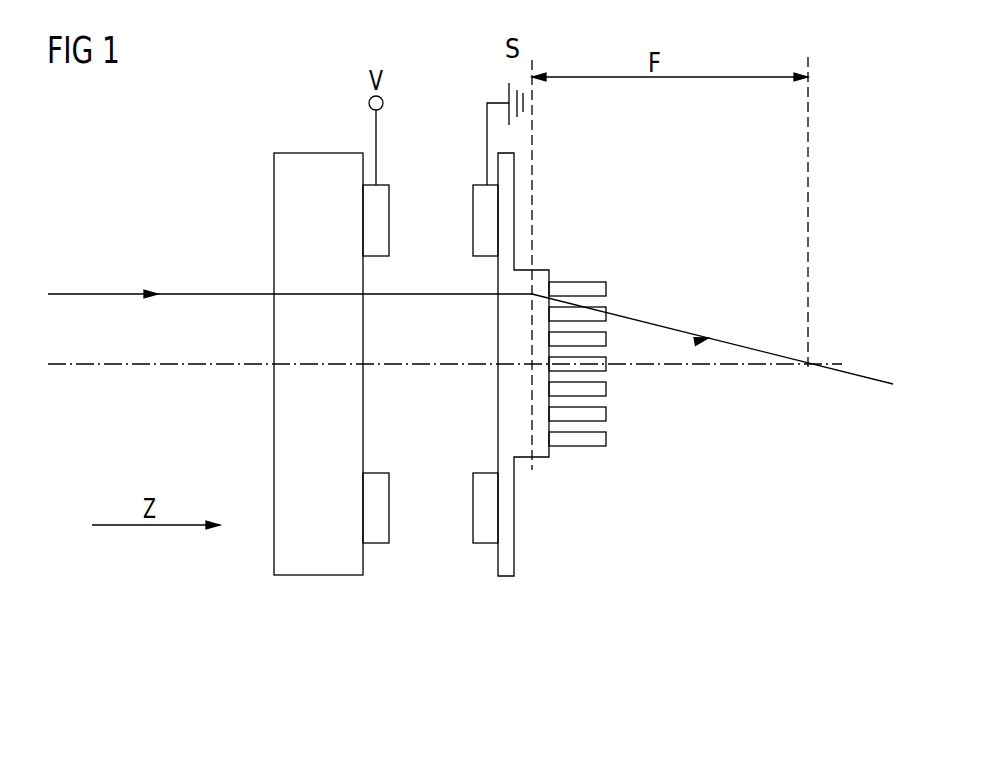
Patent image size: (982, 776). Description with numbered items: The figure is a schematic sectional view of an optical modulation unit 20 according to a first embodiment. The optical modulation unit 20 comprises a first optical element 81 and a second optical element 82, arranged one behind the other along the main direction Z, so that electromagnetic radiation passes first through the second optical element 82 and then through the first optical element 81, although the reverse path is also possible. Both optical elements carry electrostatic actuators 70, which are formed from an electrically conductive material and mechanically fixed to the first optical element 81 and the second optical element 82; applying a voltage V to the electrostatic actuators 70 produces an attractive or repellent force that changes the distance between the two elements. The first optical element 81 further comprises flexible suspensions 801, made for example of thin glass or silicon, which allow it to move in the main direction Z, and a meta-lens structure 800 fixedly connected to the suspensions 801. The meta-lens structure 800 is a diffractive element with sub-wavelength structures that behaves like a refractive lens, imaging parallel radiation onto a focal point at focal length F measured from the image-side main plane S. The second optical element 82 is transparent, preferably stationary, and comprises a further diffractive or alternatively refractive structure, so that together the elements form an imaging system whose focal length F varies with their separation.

The optical modulation unit 20 is at (460, 432).
The electrostatic actuators 70 is at (474, 198).
The first optical element 81 is at (572, 408).
The second optical element 82 is at (313, 560).
The meta-lens structure 800 is at (587, 285).
The suspensions 801 is at (507, 243).